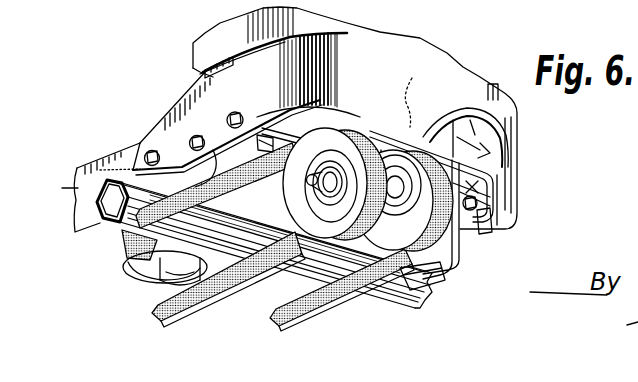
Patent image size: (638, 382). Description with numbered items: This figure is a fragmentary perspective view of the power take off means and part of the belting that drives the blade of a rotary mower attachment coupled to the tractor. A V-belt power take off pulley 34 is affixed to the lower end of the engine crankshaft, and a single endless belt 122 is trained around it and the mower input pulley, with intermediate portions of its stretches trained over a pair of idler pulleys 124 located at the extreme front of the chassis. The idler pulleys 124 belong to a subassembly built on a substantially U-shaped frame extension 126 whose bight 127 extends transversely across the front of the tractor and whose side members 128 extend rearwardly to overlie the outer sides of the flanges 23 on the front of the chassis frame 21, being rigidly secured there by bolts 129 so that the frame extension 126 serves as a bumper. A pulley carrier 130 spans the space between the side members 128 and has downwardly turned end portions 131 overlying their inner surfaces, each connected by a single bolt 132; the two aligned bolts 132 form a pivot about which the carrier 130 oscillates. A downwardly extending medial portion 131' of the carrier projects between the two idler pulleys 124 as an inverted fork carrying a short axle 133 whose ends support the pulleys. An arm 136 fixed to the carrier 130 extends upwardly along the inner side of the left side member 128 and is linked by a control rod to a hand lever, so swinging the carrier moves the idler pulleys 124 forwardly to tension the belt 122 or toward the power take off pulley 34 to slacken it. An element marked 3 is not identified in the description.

The mounting bracket 3 is at (127, 240).
The frame 21 is at (95, 172).
The flanges 23 is at (77, 186).
The power take off pulley 34 is at (143, 283).
The endless belt 122 is at (157, 317).
The idler pulleys 124 is at (347, 138).
The U-shaped frame extension 126 is at (606, 133).
The bight 127 is at (412, 78).
The side members 128 is at (185, 100).
The bolts 129 is at (190, 137).
The pulley carrier 130 is at (480, 188).
The end portions 131 is at (362, 203).
The medial portion 131' is at (451, 278).
The bolt 132 is at (229, 112).
The axle 133 is at (313, 182).
The arm 136 is at (520, 62).